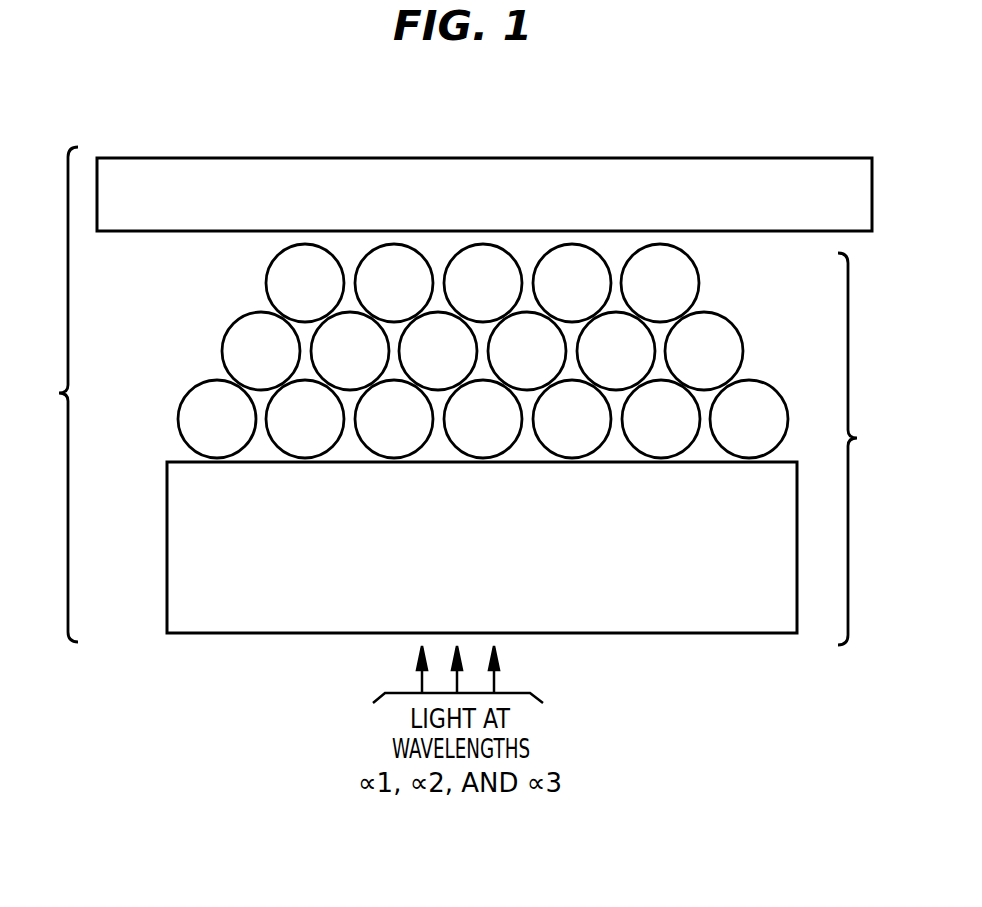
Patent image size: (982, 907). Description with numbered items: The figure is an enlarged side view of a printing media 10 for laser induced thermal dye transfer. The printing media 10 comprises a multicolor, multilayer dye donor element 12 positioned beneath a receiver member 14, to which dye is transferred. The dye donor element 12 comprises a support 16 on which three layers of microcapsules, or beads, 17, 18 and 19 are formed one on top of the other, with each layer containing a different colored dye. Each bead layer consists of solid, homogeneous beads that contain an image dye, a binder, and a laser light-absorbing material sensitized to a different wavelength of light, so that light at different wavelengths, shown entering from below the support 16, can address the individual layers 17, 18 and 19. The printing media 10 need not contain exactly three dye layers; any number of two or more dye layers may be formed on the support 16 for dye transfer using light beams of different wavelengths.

The printing media 10 is at (48, 408).
The dye donor element 12 is at (893, 457).
The receiver member 14 is at (702, 158).
The support 16 is at (693, 633).
The microcapsules (beads) 17 is at (378, 403).
The microcapsules (beads) 18 is at (400, 327).
The microcapsules (beads) 19 is at (473, 269).